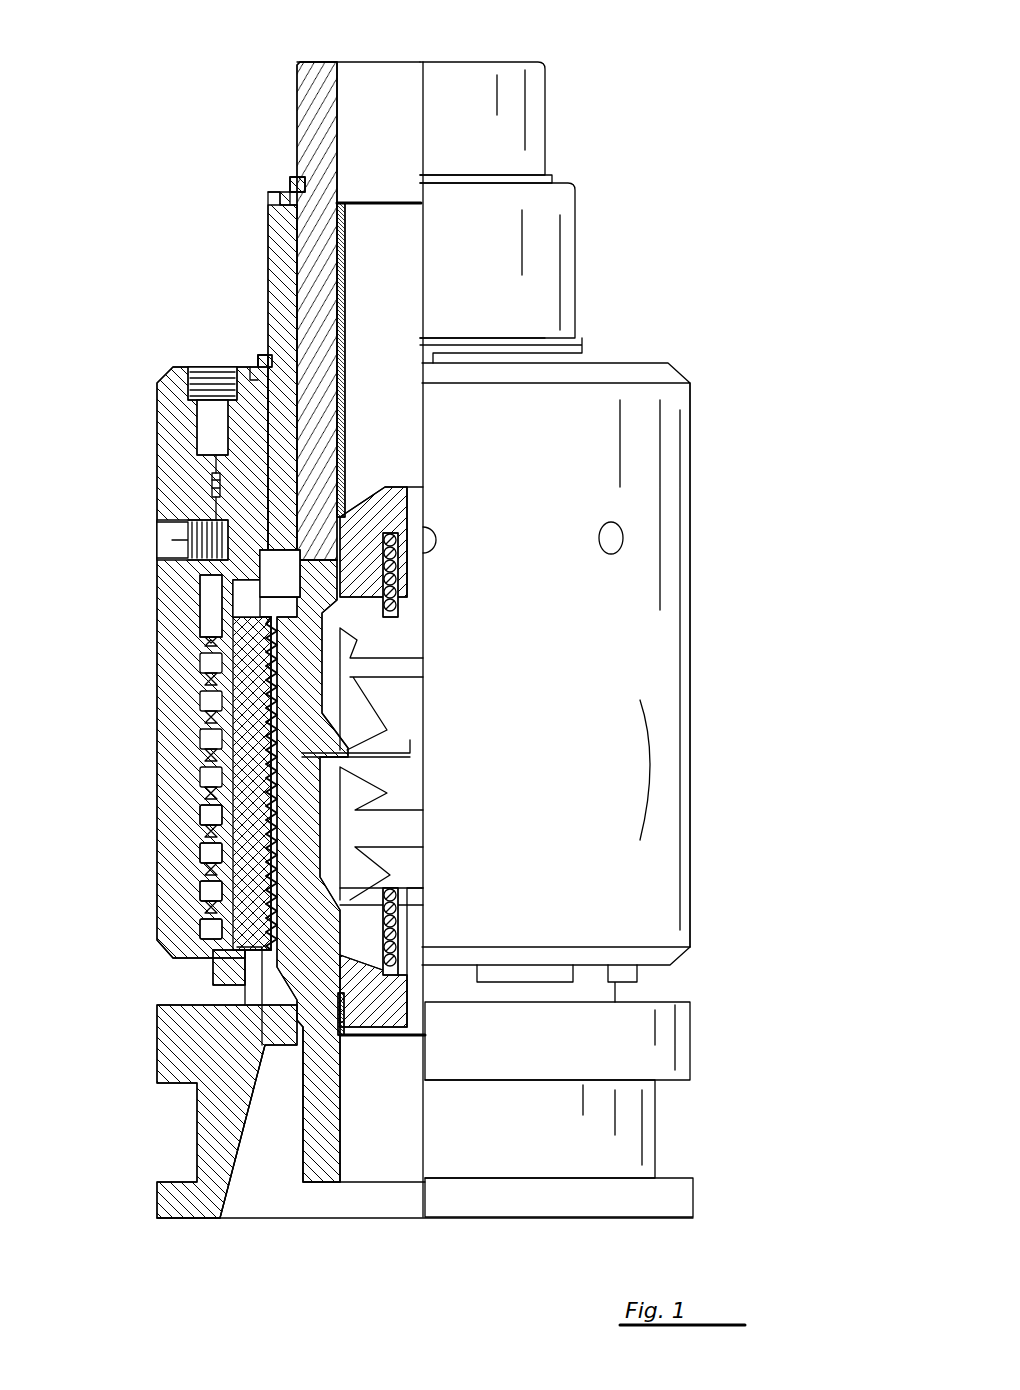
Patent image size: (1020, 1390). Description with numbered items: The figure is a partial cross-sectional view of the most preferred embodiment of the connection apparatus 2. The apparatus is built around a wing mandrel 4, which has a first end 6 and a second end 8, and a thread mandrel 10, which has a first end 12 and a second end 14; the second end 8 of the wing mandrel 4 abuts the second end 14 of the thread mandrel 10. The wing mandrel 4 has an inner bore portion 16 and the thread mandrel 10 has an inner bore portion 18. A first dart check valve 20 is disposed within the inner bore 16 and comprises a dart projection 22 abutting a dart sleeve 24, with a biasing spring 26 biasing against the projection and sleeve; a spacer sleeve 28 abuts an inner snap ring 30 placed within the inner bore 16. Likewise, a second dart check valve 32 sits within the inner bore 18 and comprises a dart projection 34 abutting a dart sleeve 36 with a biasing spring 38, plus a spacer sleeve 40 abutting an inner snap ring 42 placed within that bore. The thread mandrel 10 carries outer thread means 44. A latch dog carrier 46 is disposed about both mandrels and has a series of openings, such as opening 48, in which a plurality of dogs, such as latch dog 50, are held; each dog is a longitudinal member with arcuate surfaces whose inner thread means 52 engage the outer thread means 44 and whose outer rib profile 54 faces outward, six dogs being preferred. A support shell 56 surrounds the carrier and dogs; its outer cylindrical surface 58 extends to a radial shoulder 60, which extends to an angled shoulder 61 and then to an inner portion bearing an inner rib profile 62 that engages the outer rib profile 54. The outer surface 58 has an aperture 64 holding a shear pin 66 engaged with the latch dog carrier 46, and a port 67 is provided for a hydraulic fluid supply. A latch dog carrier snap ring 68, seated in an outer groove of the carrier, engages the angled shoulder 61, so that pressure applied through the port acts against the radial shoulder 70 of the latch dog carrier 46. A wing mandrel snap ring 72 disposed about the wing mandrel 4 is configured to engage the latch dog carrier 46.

The connection apparatus 2 is at (722, 212).
The wing mandrel 4 is at (297, 105).
The first end 6 is at (505, 62).
The second end 8 is at (285, 735).
The thread mandrel 10 is at (310, 1140).
The first end 12 is at (318, 1167).
The second end 14 is at (215, 815).
The inner bore portion 16 is at (337, 130).
The inner bore portion 18 is at (342, 1147).
The first dart check valve 20 is at (345, 635).
The dart projection 22 is at (405, 640).
The dart sleeve 24 is at (288, 335).
The biasing spring 26 is at (405, 585).
The spacer sleeve 28 is at (340, 265).
The inner snap ring 30 is at (336, 200).
The second dart check valve 32 is at (255, 930).
The dart projection 34 is at (392, 874).
The dart sleeve 36 is at (350, 967).
The biasing spring 38 is at (398, 915).
The spacer sleeve 40 is at (303, 1020).
The inner snap ring 42 is at (302, 1140).
The outer thread means 44 is at (213, 873).
The latch dog carrier 46 is at (668, 1045).
The opening 48 is at (228, 982).
The latch dog 50 is at (210, 672).
The thread means 52 is at (250, 645).
The outer rib profile 54 is at (213, 703).
The support shell 56 is at (655, 740).
The outer cylindrical surface 58 is at (692, 820).
The radial shoulder 60 is at (655, 362).
The angled shoulder 61 is at (262, 357).
The inner rib profile 62 is at (213, 905).
The aperture 64 is at (190, 535).
The shear pin 66 is at (215, 500).
The port 67 is at (205, 370).
The latch dog carrier snap ring 68 is at (268, 340).
The radial shoulder 70 is at (208, 440).
The wing mandrel snap ring 72 is at (290, 182).